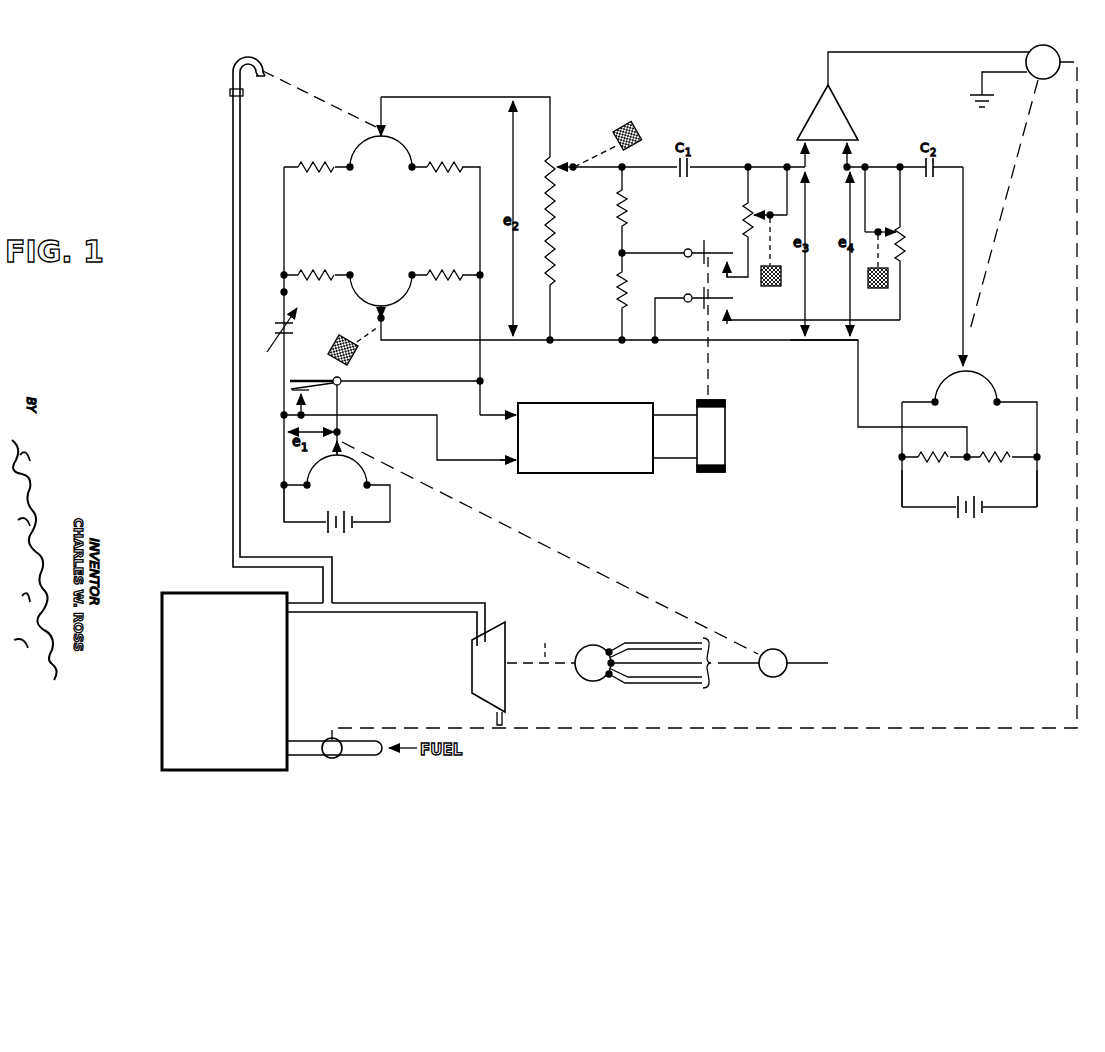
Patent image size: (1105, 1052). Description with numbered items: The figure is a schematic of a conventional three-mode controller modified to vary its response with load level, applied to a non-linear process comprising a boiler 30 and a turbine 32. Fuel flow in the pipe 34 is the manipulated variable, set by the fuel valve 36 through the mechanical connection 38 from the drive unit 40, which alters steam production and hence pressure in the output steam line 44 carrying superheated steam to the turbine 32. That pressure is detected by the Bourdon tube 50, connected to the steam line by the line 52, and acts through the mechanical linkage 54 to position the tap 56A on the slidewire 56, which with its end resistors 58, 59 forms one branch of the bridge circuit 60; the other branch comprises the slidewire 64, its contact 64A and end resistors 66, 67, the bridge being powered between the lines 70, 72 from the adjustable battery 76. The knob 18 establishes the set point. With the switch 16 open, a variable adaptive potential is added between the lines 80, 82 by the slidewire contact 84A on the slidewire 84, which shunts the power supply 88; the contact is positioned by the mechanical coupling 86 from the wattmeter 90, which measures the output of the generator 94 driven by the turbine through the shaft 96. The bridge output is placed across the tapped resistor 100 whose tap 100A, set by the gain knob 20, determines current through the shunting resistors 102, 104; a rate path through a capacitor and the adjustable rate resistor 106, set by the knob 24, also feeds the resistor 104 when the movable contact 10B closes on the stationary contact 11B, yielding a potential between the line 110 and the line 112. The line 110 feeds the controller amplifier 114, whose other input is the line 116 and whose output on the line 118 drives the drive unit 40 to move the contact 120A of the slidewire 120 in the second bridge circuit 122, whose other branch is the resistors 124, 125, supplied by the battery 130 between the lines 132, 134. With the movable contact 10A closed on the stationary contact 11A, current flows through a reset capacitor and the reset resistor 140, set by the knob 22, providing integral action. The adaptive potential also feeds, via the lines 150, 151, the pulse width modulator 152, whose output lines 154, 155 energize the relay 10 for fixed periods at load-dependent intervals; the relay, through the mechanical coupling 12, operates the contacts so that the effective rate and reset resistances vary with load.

The relay 10 is at (726, 436).
The movable contact 10A is at (701, 296).
The movable contact 10B is at (703, 250).
The stationary contact 11A is at (729, 320).
The stationary contact 11B is at (732, 264).
The mechanical coupling 12 is at (714, 364).
The switch 16 is at (322, 380).
The knob 18 is at (339, 339).
The knob 20 is at (620, 127).
The knob 22 is at (880, 288).
The knob 24 is at (781, 284).
The boiler 30 is at (234, 710).
The turbine 32 is at (500, 677).
The pipe 34 is at (362, 758).
The fuel valve 36 is at (325, 738).
The mechanical connection 38 is at (1076, 192).
The drive unit 40 is at (1058, 50).
The output steam line 44 is at (410, 614).
The Bourdon tube 50 is at (233, 63).
The line 52 is at (233, 388).
The mechanical linkage 54 is at (323, 92).
The slidewire 56 is at (396, 146).
The tap 56A is at (385, 126).
The end resistor 58 is at (316, 160).
The end resistor 59 is at (445, 162).
The bridge circuit 60 is at (390, 229).
The slidewire 64 is at (401, 298).
The contact 64A is at (389, 316).
The end resistor 66 is at (322, 270).
The end resistor 67 is at (440, 270).
The line 70 is at (282, 292).
The line 72 is at (482, 362).
The battery 76 is at (277, 332).
The line 80 is at (283, 444).
The line 82 is at (339, 422).
The slidewire 84 is at (355, 466).
The slidewire contact 84A is at (307, 458).
The mechanical coupling 86 is at (559, 532).
The power supply 88 is at (340, 535).
The wattmeter 90 is at (784, 652).
The generator 94 is at (595, 645).
The shaft 96 is at (546, 654).
The variably tapped resistor 100 is at (558, 227).
The tap 100A is at (567, 170).
The shunting resistor 102 is at (628, 225).
The shunting resistor 104 is at (618, 295).
The rate resistor 106 is at (745, 216).
The line 110 is at (791, 167).
The line 112 is at (790, 346).
The controller amplifier 114 is at (807, 115).
The line 116 is at (852, 158).
The line 118 is at (934, 53).
The slidewire 120 is at (982, 380).
The contact 120A is at (972, 352).
The second bridge circuit 122 is at (1012, 437).
The resistor 124 is at (942, 458).
The resistor 125 is at (1004, 458).
The battery 130 is at (966, 522).
The line 132 is at (901, 492).
The line 134 is at (1039, 491).
The reset resistor 140 is at (904, 239).
The line 150 is at (480, 401).
The line 151 is at (481, 460).
The pulse width modulator 152 is at (594, 402).
The output line 154 is at (671, 414).
The output line 155 is at (682, 460).